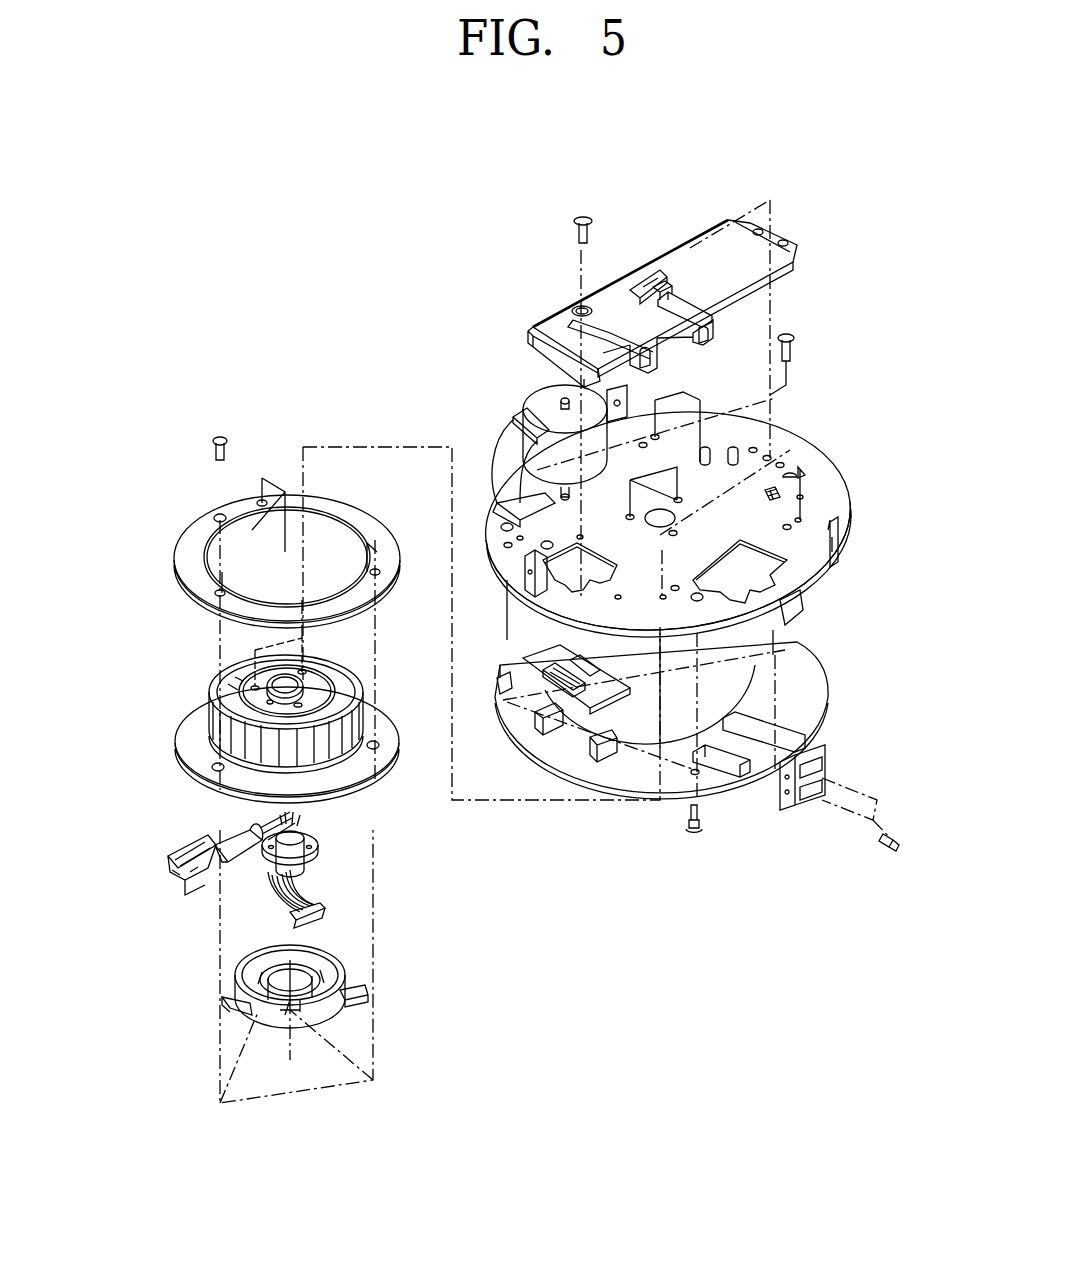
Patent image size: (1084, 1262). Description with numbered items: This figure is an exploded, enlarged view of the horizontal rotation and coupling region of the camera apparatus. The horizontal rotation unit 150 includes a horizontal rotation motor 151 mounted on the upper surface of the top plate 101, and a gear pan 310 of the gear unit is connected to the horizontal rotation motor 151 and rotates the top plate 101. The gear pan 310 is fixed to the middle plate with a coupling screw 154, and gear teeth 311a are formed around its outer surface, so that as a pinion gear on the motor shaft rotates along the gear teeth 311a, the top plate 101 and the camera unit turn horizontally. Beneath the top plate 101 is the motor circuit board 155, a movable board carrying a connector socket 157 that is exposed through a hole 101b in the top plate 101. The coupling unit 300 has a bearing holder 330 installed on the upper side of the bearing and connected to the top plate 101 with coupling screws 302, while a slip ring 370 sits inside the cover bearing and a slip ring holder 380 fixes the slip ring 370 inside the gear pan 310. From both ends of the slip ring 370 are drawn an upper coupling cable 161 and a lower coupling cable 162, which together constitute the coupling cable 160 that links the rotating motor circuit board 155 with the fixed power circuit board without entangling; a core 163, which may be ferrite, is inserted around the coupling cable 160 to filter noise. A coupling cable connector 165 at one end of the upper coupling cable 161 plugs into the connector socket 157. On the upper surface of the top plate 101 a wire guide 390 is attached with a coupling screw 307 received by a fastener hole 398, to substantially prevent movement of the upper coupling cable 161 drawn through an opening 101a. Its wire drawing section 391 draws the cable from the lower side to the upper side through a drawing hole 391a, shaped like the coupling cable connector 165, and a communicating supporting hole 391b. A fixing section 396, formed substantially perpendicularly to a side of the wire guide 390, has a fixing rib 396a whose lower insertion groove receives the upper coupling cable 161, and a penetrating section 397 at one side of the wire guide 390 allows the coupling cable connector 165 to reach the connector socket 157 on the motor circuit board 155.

The top plate 101 is at (788, 450).
The opening 101a is at (840, 520).
The hole 101b is at (530, 572).
The horizontal rotation unit 150 is at (492, 428).
The horizontal rotation motor 151 is at (518, 402).
The coupling screw 154 is at (216, 448).
The motor circuit board 155 is at (628, 770).
The connector socket 157 is at (570, 690).
The coupling cable 160 is at (200, 880).
The upper coupling cable 161 is at (180, 890).
The lower coupling cable 162 is at (265, 918).
The core 163 is at (227, 840).
The coupling cable connector 165 is at (168, 858).
The coupling unit 300 is at (152, 828).
The coupling screws 302 is at (796, 345).
The coupling screw 307 is at (583, 216).
The gear pan 310 is at (383, 718).
The gear teeth 311a is at (215, 703).
The bearing holder 330 is at (240, 690).
The slip ring 370 is at (318, 840).
The slip ring holder 380 is at (345, 990).
The wire guide 390 is at (762, 258).
The wire drawing section 391 is at (678, 225).
The drawing hole 391a is at (640, 283).
The supporting hole 391b is at (668, 290).
The fixing section 396 is at (740, 320).
The fixing rib 396a is at (695, 342).
The penetrating section 397 is at (545, 328).
The fastener hole 398 is at (575, 305).